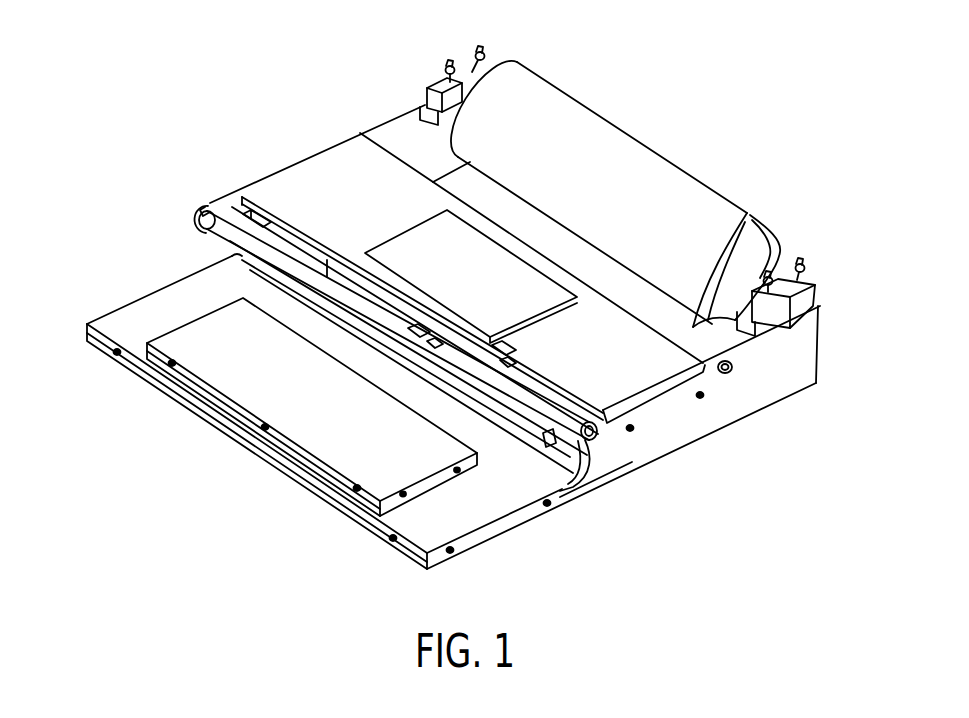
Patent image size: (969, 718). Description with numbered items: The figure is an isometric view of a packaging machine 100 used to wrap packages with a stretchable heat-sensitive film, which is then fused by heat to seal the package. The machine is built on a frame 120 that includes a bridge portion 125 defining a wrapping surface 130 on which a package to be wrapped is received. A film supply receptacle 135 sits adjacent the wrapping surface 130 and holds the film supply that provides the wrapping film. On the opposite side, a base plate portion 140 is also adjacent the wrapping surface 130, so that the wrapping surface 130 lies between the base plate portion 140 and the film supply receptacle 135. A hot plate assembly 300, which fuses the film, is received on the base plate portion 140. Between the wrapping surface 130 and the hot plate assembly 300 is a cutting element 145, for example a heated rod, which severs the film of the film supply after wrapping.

The packaging machine 100 is at (474, 294).
The frame 120 is at (820, 343).
The bridge portion 125 is at (650, 397).
The wrapping surface 130 is at (520, 307).
The film supply receptacle 135 is at (815, 291).
The base plate portion 140 is at (503, 525).
The cutting element 145 is at (214, 238).
The hot plate assembly 300 is at (307, 403).